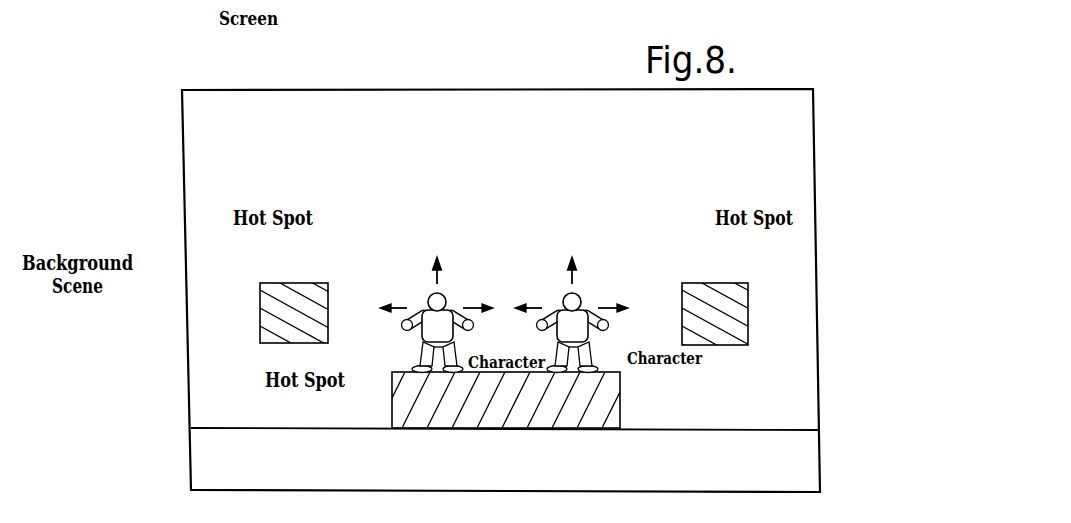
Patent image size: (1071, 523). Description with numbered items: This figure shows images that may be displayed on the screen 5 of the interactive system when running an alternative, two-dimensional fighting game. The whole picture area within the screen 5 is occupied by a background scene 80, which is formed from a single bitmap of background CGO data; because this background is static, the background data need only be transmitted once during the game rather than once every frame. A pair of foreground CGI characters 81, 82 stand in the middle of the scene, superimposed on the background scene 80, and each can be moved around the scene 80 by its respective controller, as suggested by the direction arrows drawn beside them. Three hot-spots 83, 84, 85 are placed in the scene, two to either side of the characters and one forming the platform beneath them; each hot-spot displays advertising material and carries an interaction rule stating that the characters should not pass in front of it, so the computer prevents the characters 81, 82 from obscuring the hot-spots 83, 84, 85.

The screen 5 is at (282, 89).
The background scene 80 is at (204, 290).
The foreground CGI character 81 is at (457, 357).
The foreground CGI character 82 is at (589, 358).
The hot-spot 83 is at (289, 283).
The hot-spot 84 is at (393, 403).
The hot-spot 85 is at (722, 283).